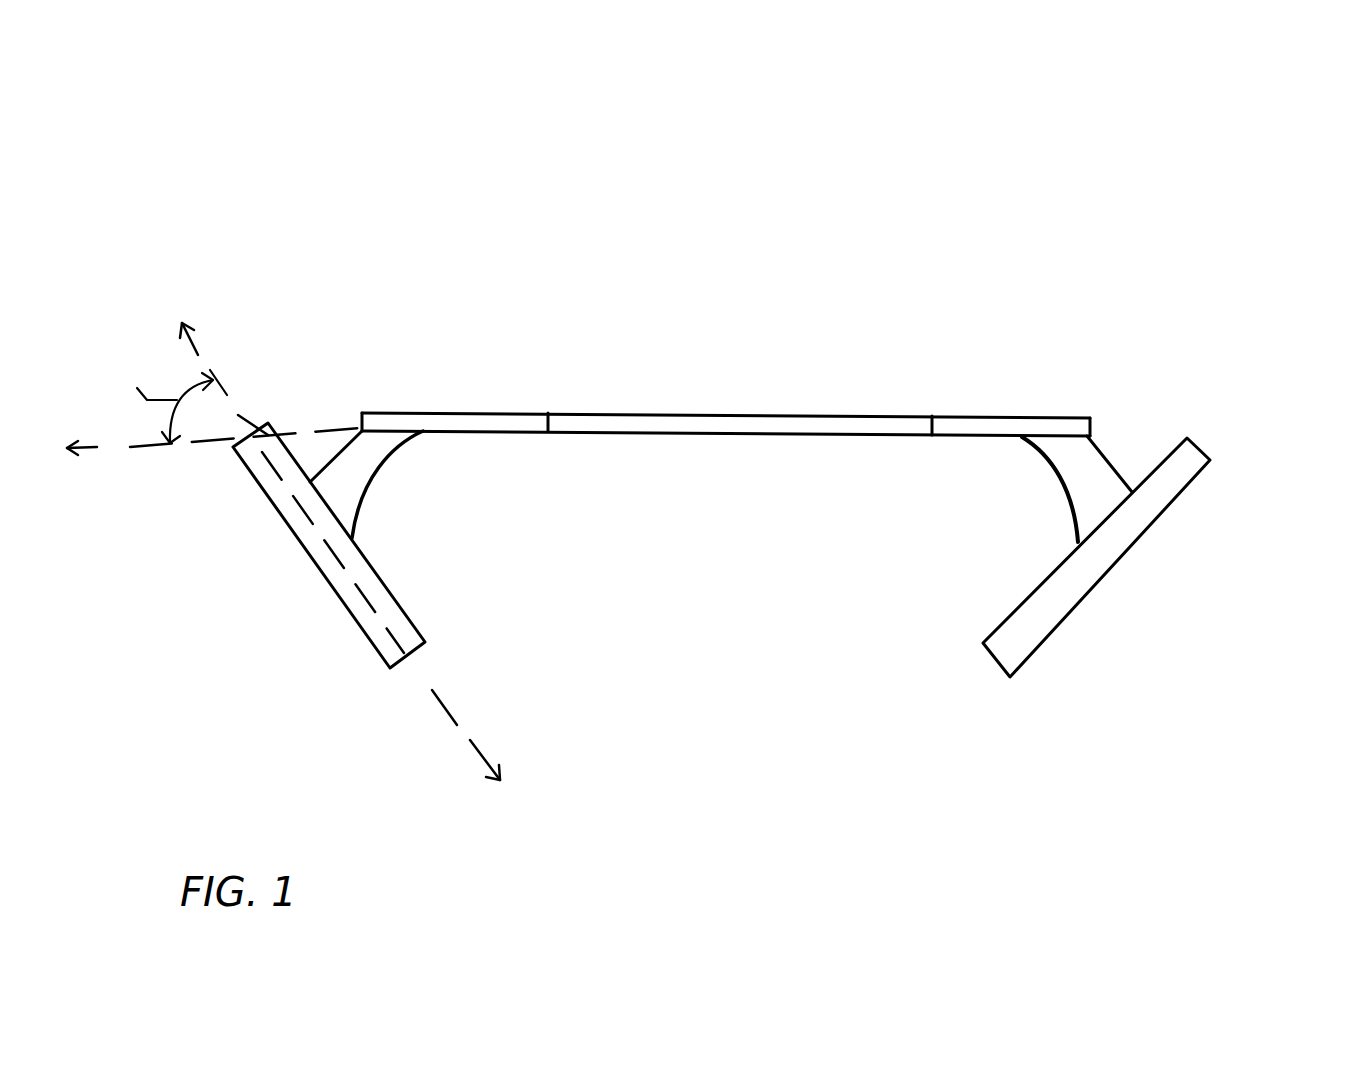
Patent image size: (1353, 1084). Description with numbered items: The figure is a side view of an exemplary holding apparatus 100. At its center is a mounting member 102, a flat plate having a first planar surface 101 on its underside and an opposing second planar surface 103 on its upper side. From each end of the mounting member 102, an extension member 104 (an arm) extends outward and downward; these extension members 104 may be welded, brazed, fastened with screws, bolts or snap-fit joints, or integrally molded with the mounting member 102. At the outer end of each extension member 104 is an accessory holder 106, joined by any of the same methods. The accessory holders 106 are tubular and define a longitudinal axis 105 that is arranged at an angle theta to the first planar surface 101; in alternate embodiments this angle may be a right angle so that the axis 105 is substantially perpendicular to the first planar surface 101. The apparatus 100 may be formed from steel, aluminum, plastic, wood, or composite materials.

The holding apparatus 100 is at (1127, 165).
The first planar surface 101 is at (570, 437).
The mounting member 102 is at (777, 417).
The second planar surface 103 is at (588, 413).
The extension members 104 is at (343, 462).
The longitudinal axis 105 is at (447, 697).
The accessory holders 106 is at (402, 630).